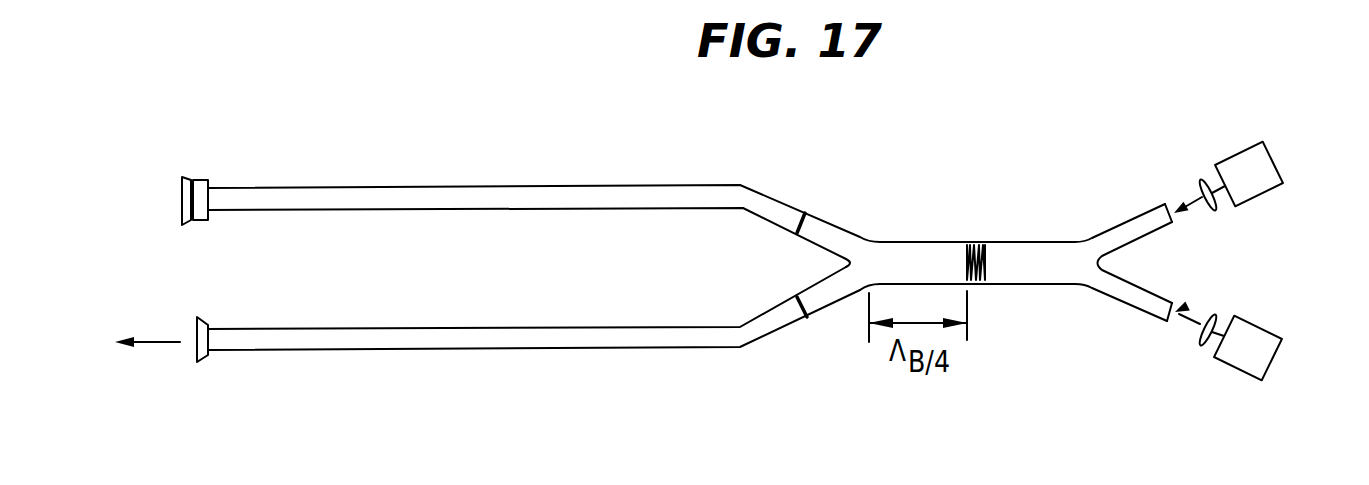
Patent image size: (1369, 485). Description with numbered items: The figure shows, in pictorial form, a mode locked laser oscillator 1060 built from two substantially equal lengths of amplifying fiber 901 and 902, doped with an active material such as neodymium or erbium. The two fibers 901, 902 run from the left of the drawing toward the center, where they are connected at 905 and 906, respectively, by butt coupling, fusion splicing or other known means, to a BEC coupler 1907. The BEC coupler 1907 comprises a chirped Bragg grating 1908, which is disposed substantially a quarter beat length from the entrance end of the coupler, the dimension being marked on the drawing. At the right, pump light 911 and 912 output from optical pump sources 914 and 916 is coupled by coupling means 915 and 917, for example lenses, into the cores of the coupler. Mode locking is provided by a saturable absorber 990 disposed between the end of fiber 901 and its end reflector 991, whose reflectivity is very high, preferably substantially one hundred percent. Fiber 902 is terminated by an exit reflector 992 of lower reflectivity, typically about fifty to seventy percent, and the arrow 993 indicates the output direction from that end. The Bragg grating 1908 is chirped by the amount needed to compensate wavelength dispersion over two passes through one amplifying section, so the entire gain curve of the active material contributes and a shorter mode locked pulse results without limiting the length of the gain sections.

The mode locked laser oscillator 1060 is at (1008, 128).
The amplifying fiber 901 is at (543, 186).
The amplifying fiber 902 is at (543, 327).
The connection 905 is at (795, 213).
The connection 906 is at (786, 307).
The BEC coupler 1907 is at (863, 293).
The chirped Bragg grating 1908 is at (975, 243).
The saturable absorber 990 is at (204, 178).
The end reflector 991 is at (188, 177).
The exit reflector 992 is at (208, 360).
The output light direction arrow 993 is at (147, 323).
The pump light 911 is at (1197, 193).
The pump light 912 is at (1197, 325).
The optical pump source 914 is at (1242, 148).
The coupling means 915 is at (1215, 212).
The optical pump source 916 is at (1276, 332).
The coupling means 917 is at (1217, 316).